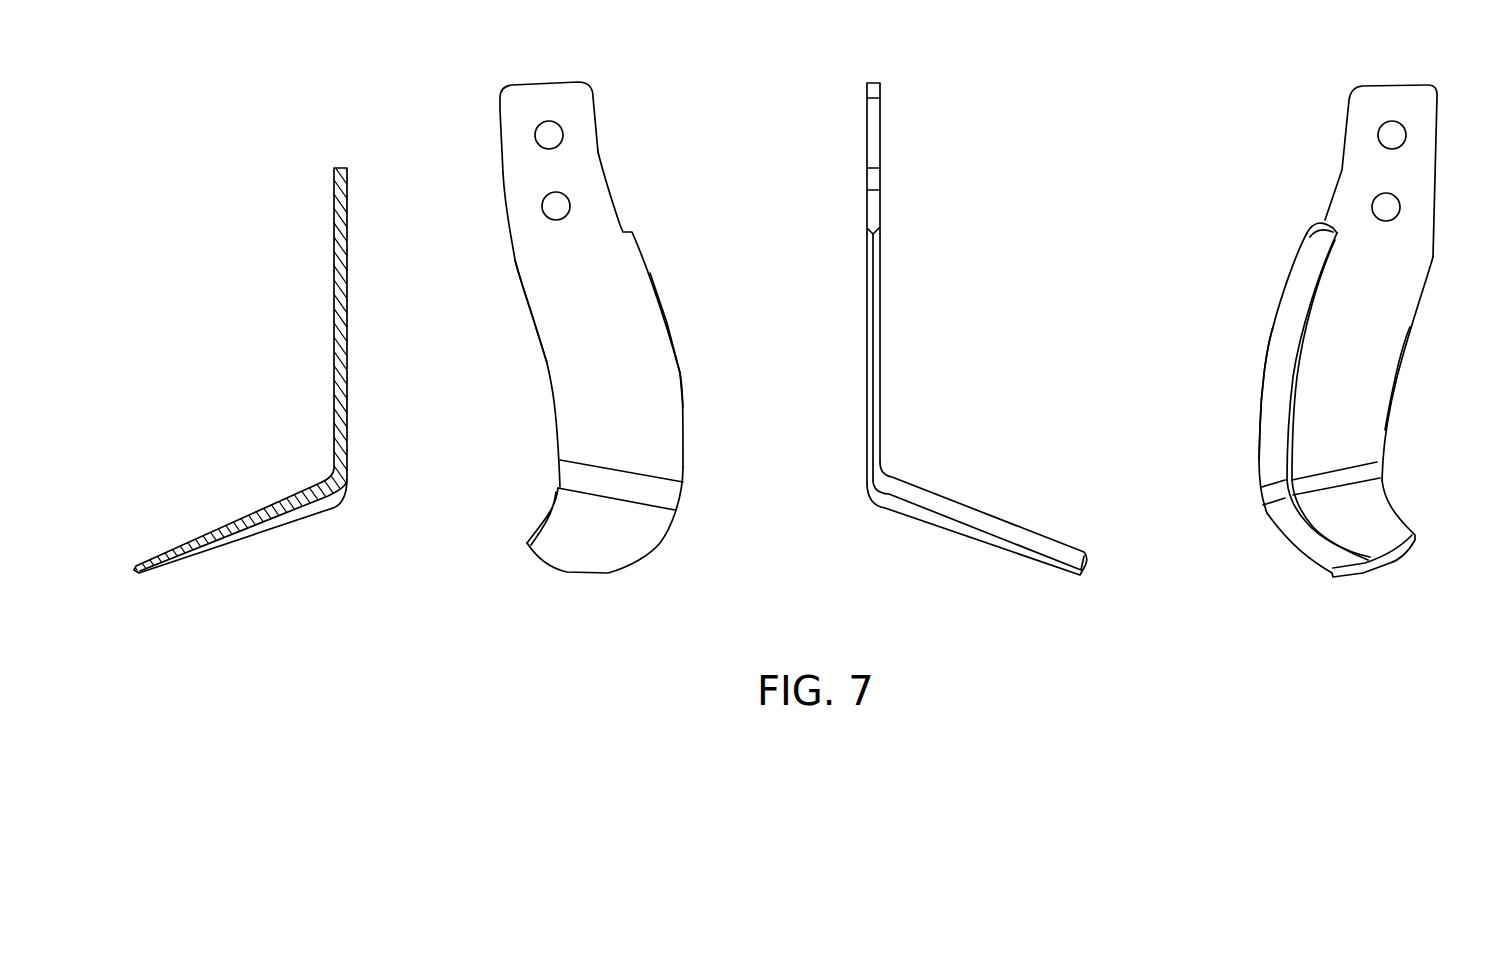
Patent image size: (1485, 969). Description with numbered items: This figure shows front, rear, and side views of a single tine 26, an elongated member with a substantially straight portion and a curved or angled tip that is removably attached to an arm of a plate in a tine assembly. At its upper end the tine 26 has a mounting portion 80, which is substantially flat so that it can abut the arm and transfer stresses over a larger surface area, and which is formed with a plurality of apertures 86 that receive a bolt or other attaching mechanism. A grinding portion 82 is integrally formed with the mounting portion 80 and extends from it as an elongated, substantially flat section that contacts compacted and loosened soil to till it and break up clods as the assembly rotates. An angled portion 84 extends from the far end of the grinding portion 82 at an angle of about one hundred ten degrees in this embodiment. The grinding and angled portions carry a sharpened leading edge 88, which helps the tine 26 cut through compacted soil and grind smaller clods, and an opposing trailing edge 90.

The tine 26 is at (246, 258).
The mounting portion 80 is at (538, 170).
The grinding portion 82 is at (610, 337).
The angled portion 84 is at (608, 537).
The apertures 86 is at (557, 190).
The leading edge 88 is at (683, 407).
The trailing edge 90 is at (548, 368).